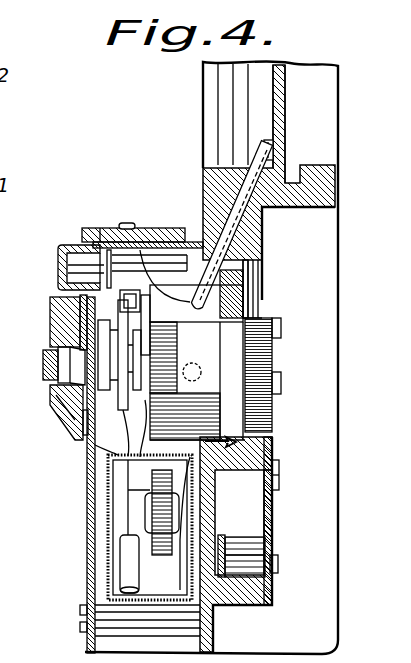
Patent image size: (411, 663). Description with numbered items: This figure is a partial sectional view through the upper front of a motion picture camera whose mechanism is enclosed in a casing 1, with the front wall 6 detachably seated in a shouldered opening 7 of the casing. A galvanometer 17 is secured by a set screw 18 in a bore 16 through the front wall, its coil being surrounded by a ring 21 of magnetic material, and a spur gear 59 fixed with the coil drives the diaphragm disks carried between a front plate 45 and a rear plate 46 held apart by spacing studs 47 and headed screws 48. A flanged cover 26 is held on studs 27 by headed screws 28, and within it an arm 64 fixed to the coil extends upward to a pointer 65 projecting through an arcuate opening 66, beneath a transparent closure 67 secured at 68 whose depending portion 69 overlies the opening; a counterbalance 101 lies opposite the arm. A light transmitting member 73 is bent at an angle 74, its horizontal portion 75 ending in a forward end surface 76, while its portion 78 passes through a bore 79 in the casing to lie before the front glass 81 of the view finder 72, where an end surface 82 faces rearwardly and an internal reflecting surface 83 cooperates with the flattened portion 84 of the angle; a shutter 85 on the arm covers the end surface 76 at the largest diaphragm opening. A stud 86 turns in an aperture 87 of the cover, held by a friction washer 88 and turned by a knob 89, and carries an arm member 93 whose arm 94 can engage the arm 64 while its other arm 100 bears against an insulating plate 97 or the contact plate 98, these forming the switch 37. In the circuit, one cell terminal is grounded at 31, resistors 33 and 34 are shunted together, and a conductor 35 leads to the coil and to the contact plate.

The casing 1 is at (197, 203).
The front wall 6 is at (200, 531).
The shouldered opening 7 is at (258, 237).
The bore 16 is at (233, 280).
The galvanometer 17 is at (272, 452).
The set screw 18 is at (199, 369).
The ring 21 is at (245, 315).
The flanged cover 26 is at (90, 553).
The studs 27 is at (205, 623).
The headed screws 28 is at (80, 620).
The ground connection 31 is at (200, 520).
The resistor 33 is at (128, 480).
The resistor 34 is at (125, 567).
The conductor 35 is at (124, 492).
The switch 37 is at (128, 415).
The front plate 45 is at (228, 545).
The rear plate 46 is at (270, 520).
The spacing studs 47 is at (250, 555).
The headed screws 48 is at (270, 571).
The spur gear 59 is at (266, 322).
The arm 64 is at (133, 241).
The pointer 65 is at (70, 269).
The arcuate opening 66 is at (108, 228).
The closure 67 is at (80, 228).
The securing means 68 is at (130, 228).
The depending portion 69 is at (60, 253).
The view finder 72 is at (320, 70).
The light transmitting member 73 is at (247, 157).
The angle 74 is at (186, 298).
The portion 75 is at (172, 354).
The forward end surface 76 is at (119, 300).
The portion 78 is at (218, 248).
The bore 79 is at (262, 214).
The front glass 81 is at (275, 117).
The end surface 82 is at (273, 148).
The internal reflecting surface 83 is at (270, 138).
The flattened portion 84 is at (190, 305).
The shutter 85 is at (124, 223).
The stud 86 is at (47, 368).
The aperture 87 is at (52, 356).
The friction washer 88 is at (56, 410).
The knob 89 is at (52, 320).
The arm member 93 is at (68, 412).
The arm 94 is at (52, 296).
The insulating plate 97 is at (125, 475).
The contact plate 98 is at (90, 447).
The arm 100 is at (83, 424).
The counterbalance 101 is at (145, 412).